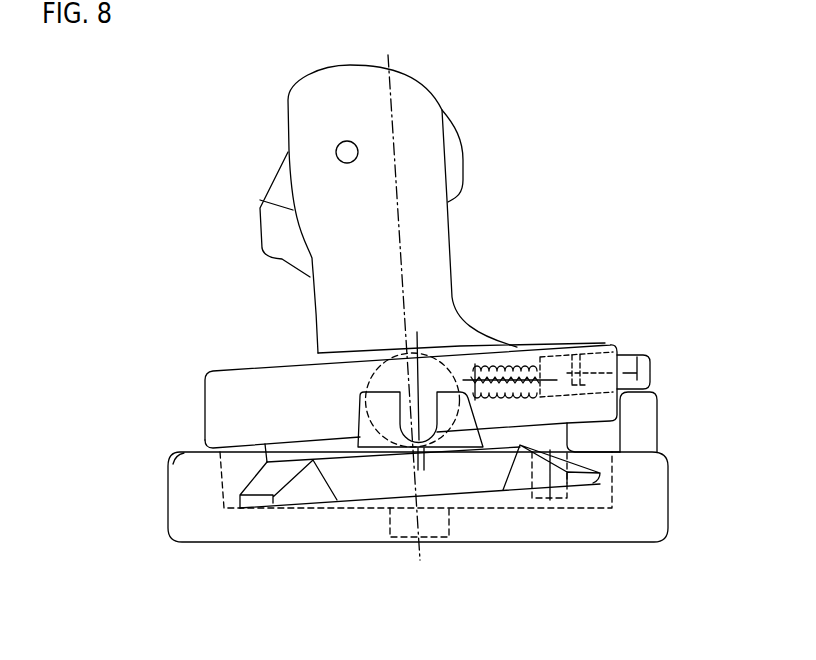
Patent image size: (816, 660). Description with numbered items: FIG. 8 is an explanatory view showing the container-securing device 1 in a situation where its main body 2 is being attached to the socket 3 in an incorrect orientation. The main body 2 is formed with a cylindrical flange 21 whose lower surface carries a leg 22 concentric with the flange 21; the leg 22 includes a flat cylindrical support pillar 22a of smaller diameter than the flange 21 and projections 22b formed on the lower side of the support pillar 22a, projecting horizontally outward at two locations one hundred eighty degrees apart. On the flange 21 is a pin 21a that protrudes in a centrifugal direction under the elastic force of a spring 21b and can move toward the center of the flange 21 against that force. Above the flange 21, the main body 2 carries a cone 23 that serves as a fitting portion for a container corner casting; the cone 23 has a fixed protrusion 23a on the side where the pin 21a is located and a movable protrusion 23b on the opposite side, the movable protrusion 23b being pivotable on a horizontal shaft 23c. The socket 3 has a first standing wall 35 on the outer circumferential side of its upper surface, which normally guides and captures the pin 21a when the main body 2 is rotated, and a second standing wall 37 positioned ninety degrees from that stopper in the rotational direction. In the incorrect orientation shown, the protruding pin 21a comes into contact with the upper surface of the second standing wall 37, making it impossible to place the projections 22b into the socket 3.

The container-securing device 1 is at (514, 137).
The main body 2 is at (280, 96).
The socket 3 is at (183, 498).
The flange 21 is at (229, 382).
The pin 21a is at (640, 352).
The spring 21b is at (538, 355).
The leg 22 is at (567, 590).
The support pillar 22a is at (370, 453).
The projections 22b is at (526, 560).
The cone 23 is at (438, 245).
The fixed protrusion 23a is at (455, 166).
The movable protrusion 23b is at (272, 222).
The horizontal shaft 23c is at (335, 150).
The first standing wall 35 is at (360, 414).
The second standing wall 37 is at (648, 424).